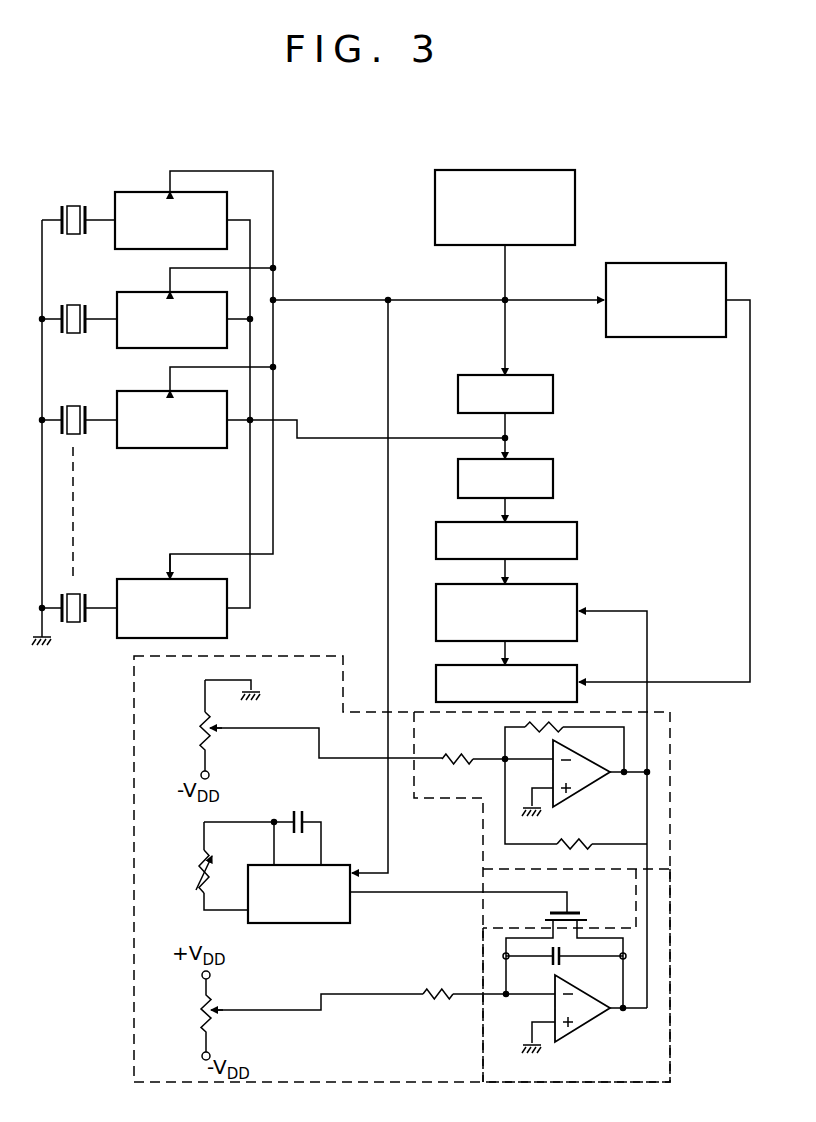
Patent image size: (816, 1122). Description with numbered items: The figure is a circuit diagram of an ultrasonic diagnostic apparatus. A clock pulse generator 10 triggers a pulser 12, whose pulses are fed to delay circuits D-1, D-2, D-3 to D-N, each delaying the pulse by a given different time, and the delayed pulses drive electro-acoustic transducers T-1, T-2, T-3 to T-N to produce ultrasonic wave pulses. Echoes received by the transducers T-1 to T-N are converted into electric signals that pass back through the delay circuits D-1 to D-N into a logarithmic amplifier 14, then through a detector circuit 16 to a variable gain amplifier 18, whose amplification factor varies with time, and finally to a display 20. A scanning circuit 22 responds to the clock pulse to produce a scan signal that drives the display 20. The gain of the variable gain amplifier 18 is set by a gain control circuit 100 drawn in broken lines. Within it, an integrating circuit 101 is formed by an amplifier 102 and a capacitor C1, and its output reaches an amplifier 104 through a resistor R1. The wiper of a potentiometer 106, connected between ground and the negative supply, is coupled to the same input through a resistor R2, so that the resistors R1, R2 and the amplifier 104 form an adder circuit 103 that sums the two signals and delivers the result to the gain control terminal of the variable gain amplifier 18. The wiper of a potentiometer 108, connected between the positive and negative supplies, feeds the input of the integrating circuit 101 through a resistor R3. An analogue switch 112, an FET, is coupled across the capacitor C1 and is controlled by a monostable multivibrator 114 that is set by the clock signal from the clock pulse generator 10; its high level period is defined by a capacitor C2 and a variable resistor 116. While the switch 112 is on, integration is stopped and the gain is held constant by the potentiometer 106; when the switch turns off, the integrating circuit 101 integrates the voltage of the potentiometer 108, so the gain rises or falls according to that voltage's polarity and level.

The clock pulse generator 10 is at (575, 193).
The pulser 12 is at (553, 393).
The logarithmic amplifier 14 is at (553, 483).
The detector circuit 16 is at (577, 543).
The variable gain amplifier 18 is at (577, 592).
The display 20 is at (577, 669).
The scanning circuit 22 is at (695, 263).
The gain control circuit 100 is at (742, 805).
The integrating circuit 101 is at (482, 1038).
The amplifier 102 is at (590, 1020).
The adder circuit 103 is at (455, 802).
The amplifier 104 is at (590, 783).
The potentiometer 106 is at (200, 718).
The potentiometer 108 is at (200, 1012).
The analogue switch 112 is at (570, 908).
The monostable multivibrator 114 is at (350, 920).
The variable resistor 116 is at (196, 874).
The electro-acoustic transducer T-1 is at (73, 206).
The electro-acoustic transducer T-2 is at (73, 305).
The electro-acoustic transducer T-3 is at (73, 406).
The electro-acoustic transducer T-N is at (80, 594).
The delay circuit D-1 is at (136, 192).
The delay circuit D-2 is at (136, 292).
The delay circuit D-3 is at (136, 391).
The delay circuit D-N is at (140, 579).
The resistor R1 is at (580, 846).
The resistor R2 is at (451, 756).
The resistor R3 is at (434, 990).
The capacitor C1 is at (563, 961).
The capacitor C2 is at (302, 808).